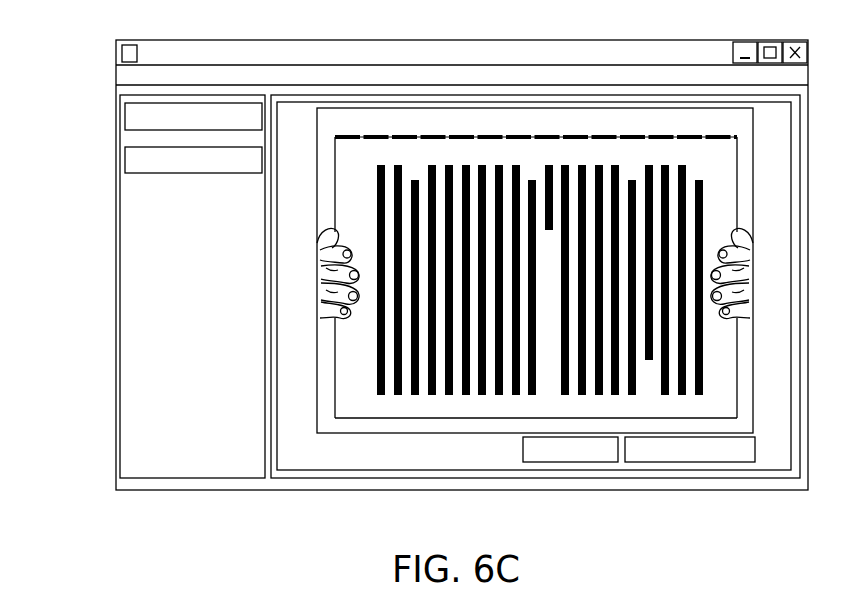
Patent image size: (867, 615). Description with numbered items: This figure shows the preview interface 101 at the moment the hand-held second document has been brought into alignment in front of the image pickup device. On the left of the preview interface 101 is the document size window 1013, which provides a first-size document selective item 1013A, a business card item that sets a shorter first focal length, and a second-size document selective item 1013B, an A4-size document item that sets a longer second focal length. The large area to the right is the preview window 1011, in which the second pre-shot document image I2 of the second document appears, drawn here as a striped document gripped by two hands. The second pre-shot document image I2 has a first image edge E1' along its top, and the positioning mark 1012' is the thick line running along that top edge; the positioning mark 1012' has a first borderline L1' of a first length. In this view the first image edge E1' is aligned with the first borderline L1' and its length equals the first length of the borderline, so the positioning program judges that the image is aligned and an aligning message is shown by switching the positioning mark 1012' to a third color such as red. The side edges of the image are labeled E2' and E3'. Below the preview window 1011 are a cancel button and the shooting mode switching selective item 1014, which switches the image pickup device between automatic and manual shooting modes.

The preview interface 101 is at (507, 73).
The preview window 1011 is at (532, 405).
The positioning mark 1012' is at (551, 197).
The document size window 1013 is at (144, 288).
The first-size document selective item 1013A is at (135, 118).
The second-size document selective item 1013B is at (135, 156).
The shooting mode switching selective item 1014 is at (743, 453).
The first borderline L1' is at (536, 68).
The first image edge E1' is at (536, 69).
The left edge of image E2' is at (312, 335).
The right edge of image E3' is at (772, 343).
The second pre-shot document image I2 is at (460, 410).